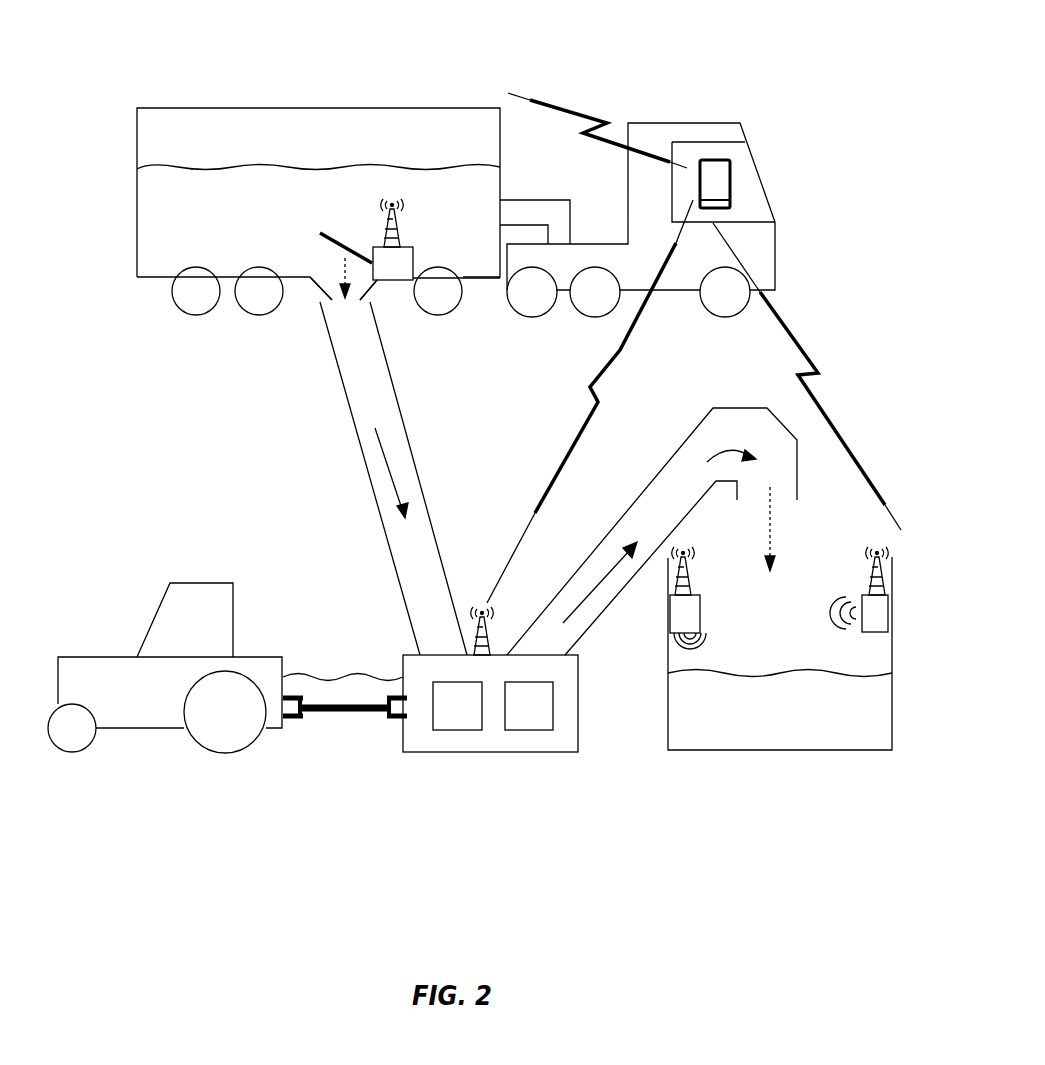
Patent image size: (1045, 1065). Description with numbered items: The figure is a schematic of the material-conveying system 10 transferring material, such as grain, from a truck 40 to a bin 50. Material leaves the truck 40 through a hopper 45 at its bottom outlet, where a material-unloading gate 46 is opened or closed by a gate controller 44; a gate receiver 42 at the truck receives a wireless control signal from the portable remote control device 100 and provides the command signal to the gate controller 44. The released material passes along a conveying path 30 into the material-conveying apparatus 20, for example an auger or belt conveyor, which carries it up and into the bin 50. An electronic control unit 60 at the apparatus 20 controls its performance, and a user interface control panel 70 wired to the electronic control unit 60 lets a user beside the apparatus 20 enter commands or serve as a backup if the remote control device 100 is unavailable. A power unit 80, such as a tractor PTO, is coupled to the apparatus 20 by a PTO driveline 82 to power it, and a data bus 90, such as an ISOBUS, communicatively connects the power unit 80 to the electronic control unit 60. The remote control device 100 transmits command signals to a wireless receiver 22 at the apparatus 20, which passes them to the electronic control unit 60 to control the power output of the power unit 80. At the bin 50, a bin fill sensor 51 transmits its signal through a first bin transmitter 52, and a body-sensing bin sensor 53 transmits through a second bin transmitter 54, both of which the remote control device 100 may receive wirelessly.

The material-conveying system 10 is at (122, 427).
The material-conveying apparatus 20 is at (593, 620).
The wireless receiver 22 is at (486, 628).
The unloading conveyor 30 is at (363, 465).
The truck 40 is at (287, 108).
The gate receiver 42 is at (398, 205).
The gate controller 44 is at (393, 263).
The hopper 45 is at (333, 284).
The material-unloading gate 46 is at (360, 250).
The bin 50 is at (795, 750).
The bin fill sensor 51 is at (680, 617).
The first bin transmitter 52 is at (697, 580).
The body-sensing bin sensor 53 is at (887, 612).
The second bin transmitter 54 is at (862, 580).
The electronic control unit 60 is at (457, 706).
The user interface control panel 70 is at (529, 706).
The power unit 80 is at (90, 657).
The PTO driveline 82 is at (345, 719).
The data bus 90 is at (345, 677).
The portable remote control device 100 is at (730, 180).